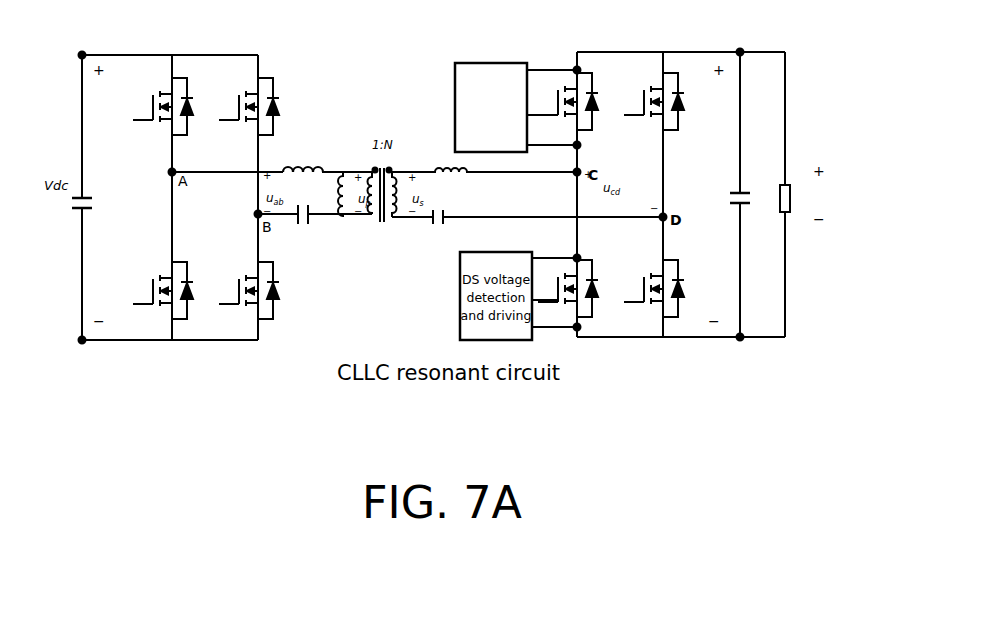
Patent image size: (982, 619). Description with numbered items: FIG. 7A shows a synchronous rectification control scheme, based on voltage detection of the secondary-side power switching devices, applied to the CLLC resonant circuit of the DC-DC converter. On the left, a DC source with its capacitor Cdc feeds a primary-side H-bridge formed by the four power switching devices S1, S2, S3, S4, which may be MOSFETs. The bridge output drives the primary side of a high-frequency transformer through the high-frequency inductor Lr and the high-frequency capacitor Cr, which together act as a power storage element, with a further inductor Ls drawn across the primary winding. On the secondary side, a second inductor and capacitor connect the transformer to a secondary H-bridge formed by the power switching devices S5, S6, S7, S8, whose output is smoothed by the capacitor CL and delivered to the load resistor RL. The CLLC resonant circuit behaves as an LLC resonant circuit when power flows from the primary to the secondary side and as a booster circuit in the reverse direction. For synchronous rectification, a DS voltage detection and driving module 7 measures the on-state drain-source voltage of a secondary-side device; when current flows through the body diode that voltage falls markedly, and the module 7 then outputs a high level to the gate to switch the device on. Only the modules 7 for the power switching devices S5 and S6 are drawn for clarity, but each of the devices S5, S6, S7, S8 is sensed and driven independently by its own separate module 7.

The DS voltage detection and driving module 7 is at (497, 63).
The power switching device S1 is at (163, 106).
The power switching device S2 is at (163, 290).
The power switching device S3 is at (249, 106).
The power switching device S4 is at (249, 290).
The power switching device S5 is at (568, 101).
The power switching device S6 is at (568, 288).
The power switching device S7 is at (654, 101).
The power switching device S8 is at (654, 288).
The DC input capacitor Cdc is at (93, 203).
The high-frequency inductor Lr is at (303, 160).
The high-frequency capacitor Cr is at (305, 226).
The magnetizing inductor Ls is at (333, 194).
The output capacitor CL is at (747, 208).
The load resistor RL is at (824, 198).